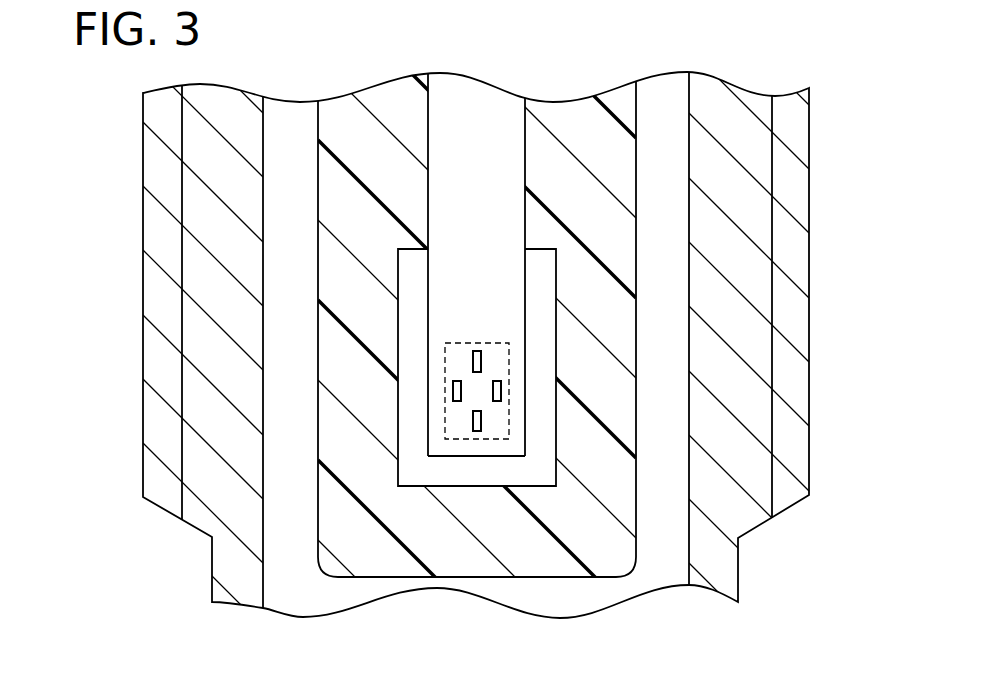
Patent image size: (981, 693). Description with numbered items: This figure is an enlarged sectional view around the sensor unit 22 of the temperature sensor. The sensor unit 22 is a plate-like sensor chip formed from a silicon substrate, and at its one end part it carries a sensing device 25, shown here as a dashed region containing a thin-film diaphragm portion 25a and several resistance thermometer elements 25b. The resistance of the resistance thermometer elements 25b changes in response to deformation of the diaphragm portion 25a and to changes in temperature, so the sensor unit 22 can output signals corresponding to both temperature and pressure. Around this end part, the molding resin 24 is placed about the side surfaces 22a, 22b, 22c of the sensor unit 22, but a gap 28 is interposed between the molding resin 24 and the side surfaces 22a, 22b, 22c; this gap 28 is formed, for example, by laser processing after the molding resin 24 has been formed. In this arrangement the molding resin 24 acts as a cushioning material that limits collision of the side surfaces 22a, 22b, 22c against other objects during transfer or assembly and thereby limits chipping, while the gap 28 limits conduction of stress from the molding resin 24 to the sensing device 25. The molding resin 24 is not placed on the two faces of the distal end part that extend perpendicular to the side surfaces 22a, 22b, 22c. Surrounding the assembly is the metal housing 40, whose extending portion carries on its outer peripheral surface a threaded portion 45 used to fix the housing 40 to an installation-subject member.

The sensor unit 22 is at (474, 355).
The side surface 22a is at (428, 393).
The side surface 22b is at (503, 457).
The side surface 22c is at (527, 425).
The molding resin 24 is at (608, 320).
The sensing device 25 is at (454, 497).
The diaphragm portion 25a is at (476, 440).
The resistance thermometer elements 25b is at (462, 413).
The gap 28 is at (415, 420).
The housing 40 is at (740, 507).
The threaded portion 45 is at (792, 372).